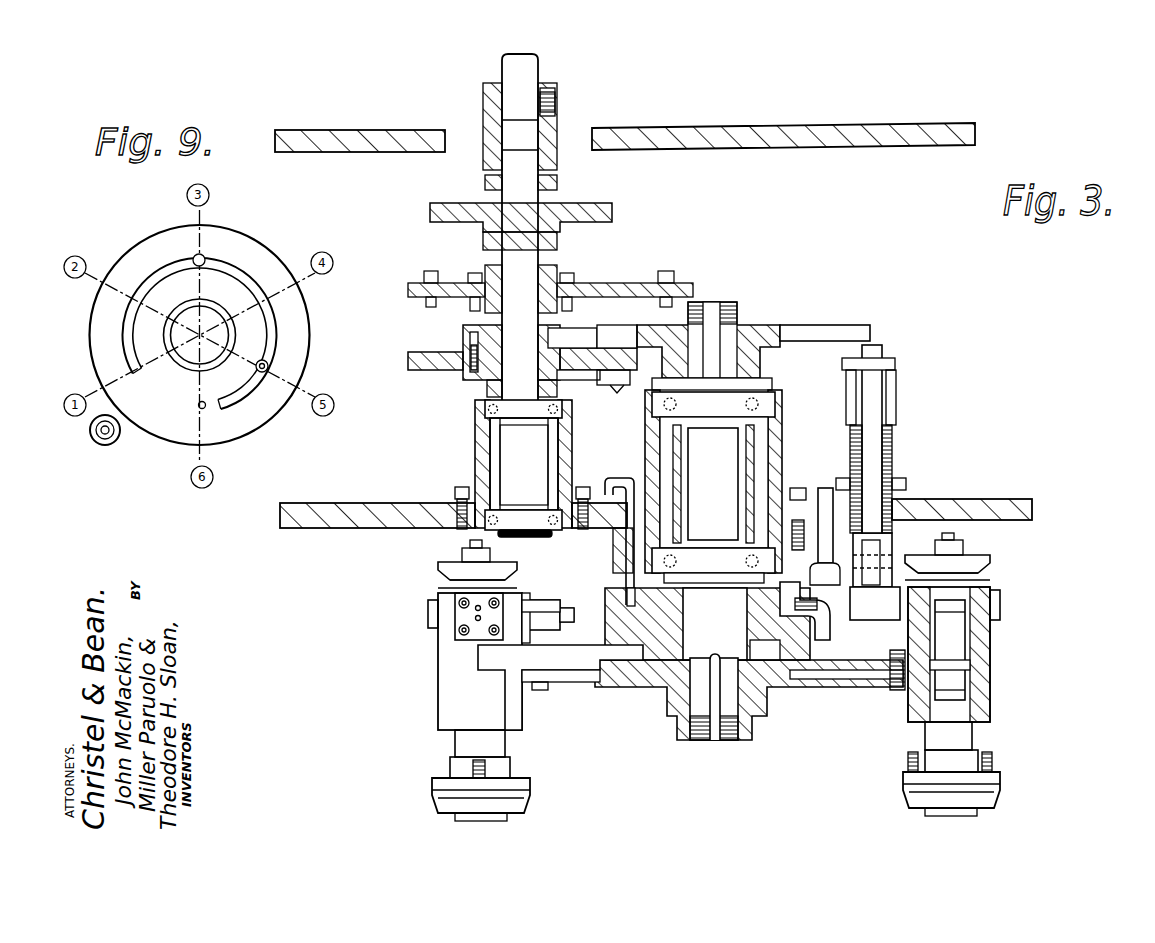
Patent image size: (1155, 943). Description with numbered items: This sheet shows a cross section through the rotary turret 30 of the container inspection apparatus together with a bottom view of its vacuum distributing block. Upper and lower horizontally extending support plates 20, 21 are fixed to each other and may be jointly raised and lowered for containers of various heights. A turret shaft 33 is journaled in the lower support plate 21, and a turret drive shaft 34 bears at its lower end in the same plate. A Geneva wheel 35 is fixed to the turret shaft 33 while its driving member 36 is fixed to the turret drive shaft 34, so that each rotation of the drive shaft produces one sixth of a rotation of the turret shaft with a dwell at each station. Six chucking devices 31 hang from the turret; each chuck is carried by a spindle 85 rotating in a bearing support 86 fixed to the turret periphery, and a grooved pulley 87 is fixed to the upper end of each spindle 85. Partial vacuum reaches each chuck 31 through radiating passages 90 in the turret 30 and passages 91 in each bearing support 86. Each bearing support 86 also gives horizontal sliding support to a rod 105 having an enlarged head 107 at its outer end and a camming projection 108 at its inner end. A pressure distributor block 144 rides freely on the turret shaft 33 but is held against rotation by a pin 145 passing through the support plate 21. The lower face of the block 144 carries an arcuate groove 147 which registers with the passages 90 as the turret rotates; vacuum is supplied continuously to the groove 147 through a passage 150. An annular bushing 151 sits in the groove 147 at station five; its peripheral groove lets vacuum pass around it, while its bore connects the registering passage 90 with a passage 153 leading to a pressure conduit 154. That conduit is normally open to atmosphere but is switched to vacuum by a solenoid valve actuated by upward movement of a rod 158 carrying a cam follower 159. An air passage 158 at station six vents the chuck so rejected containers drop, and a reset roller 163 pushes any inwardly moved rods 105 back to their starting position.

In FIG. 3, the upper support plate 20 is at (334, 153).
In FIG. 3, the lower support plate 21 is at (333, 502).
In FIG. 3, the rotary turret 30 is at (727, 742).
In FIG. 3, the chucking device 31 is at (440, 800).
In FIG. 3, the turret shaft 33 is at (728, 335).
In FIG. 3, the turret drive shaft 34 is at (517, 190).
In FIG. 3, the Geneva wheel 35 is at (835, 333).
In FIG. 3, the driving member 36 is at (448, 372).
In FIG. 3, the chuck spindle 85 is at (950, 660).
In FIG. 3, the bearing support 86 is at (438, 652).
In FIG. 3, the grooved pulley 87 is at (455, 566).
In FIG. 3, the radiating passage 90 is at (615, 690).
In FIG. 3, the passage 91 is at (897, 662).
In FIG. 3, the rod 105 is at (520, 632).
In FIG. 3, the enlarged head 107 is at (428, 612).
In FIG. 3, the camming projection 108 is at (548, 596).
In FIG. 3, the pressure distributor block 144 is at (605, 620).
In FIG. 3, the pin 145 is at (617, 448).
In FIG. 9, the arcuate groove 147 is at (273, 318).
In FIG. 3, the arcuate groove 147 is at (615, 652).
In FIG. 9, the passage 150 is at (201, 259).
In FIG. 9, the annular bushing 151 is at (268, 364).
In FIG. 3, the annular bushing 151 is at (790, 638).
In FIG. 3, the passage 153 is at (760, 612).
In FIG. 3, the pressure conduit 154 is at (825, 485).
In FIG. 9, the rod 158 is at (198, 405).
In FIG. 3, the rod 158 is at (870, 445).
In FIG. 3, the cam follower 159 is at (870, 595).
In FIG. 9, the reset roller 163 is at (107, 445).